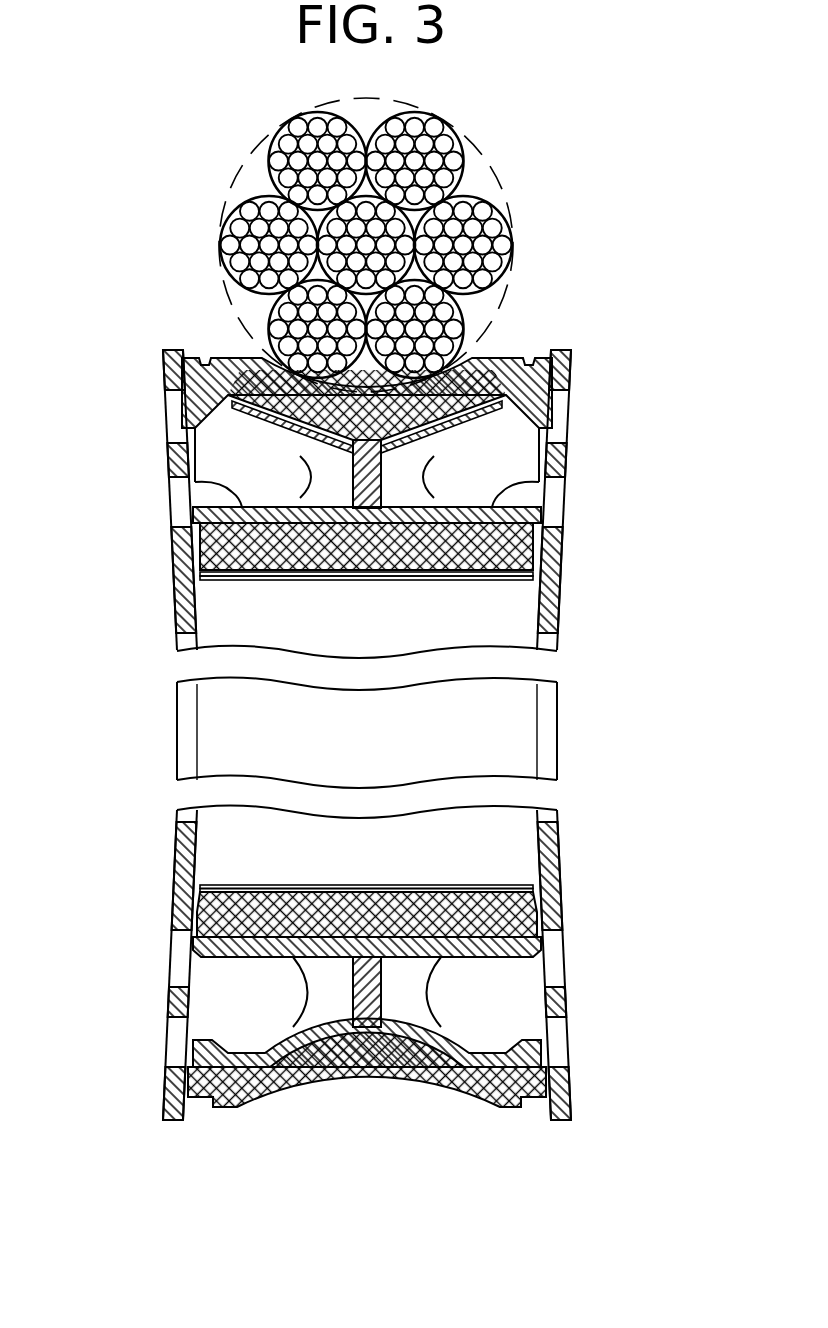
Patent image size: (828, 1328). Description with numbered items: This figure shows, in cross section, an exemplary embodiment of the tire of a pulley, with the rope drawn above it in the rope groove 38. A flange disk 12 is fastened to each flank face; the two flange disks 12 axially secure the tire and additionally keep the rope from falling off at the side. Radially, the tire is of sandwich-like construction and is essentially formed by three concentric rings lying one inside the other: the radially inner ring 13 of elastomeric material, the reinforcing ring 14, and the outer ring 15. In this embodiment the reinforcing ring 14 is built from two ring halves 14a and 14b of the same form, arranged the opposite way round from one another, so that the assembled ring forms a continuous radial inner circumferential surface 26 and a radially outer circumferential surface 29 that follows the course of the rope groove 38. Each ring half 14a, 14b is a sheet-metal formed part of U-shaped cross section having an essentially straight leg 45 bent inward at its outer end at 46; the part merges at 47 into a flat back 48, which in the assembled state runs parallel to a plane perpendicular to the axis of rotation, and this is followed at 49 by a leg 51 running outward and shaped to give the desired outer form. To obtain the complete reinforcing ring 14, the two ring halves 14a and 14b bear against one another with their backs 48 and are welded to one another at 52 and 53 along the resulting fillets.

The flange disk 12 is at (170, 350).
The radially inner ring 13 is at (505, 860).
The reinforcing ring 14 is at (368, 439).
The ring half 14a is at (197, 490).
The ring half 14b is at (540, 482).
The radially outer ring 15 is at (403, 1017).
The radial inner circumferential surface 26 is at (197, 565).
The radially outer circumferential surface 29 is at (452, 392).
The rope groove 38 is at (386, 385).
The leg 45 is at (193, 527).
The inward bend 46 is at (197, 492).
The transition 47 is at (424, 491).
The flat back 48 is at (312, 491).
The transition 49 is at (392, 452).
The leg 51 is at (312, 443).
The weld 52 is at (402, 578).
The weld 53 is at (316, 572).